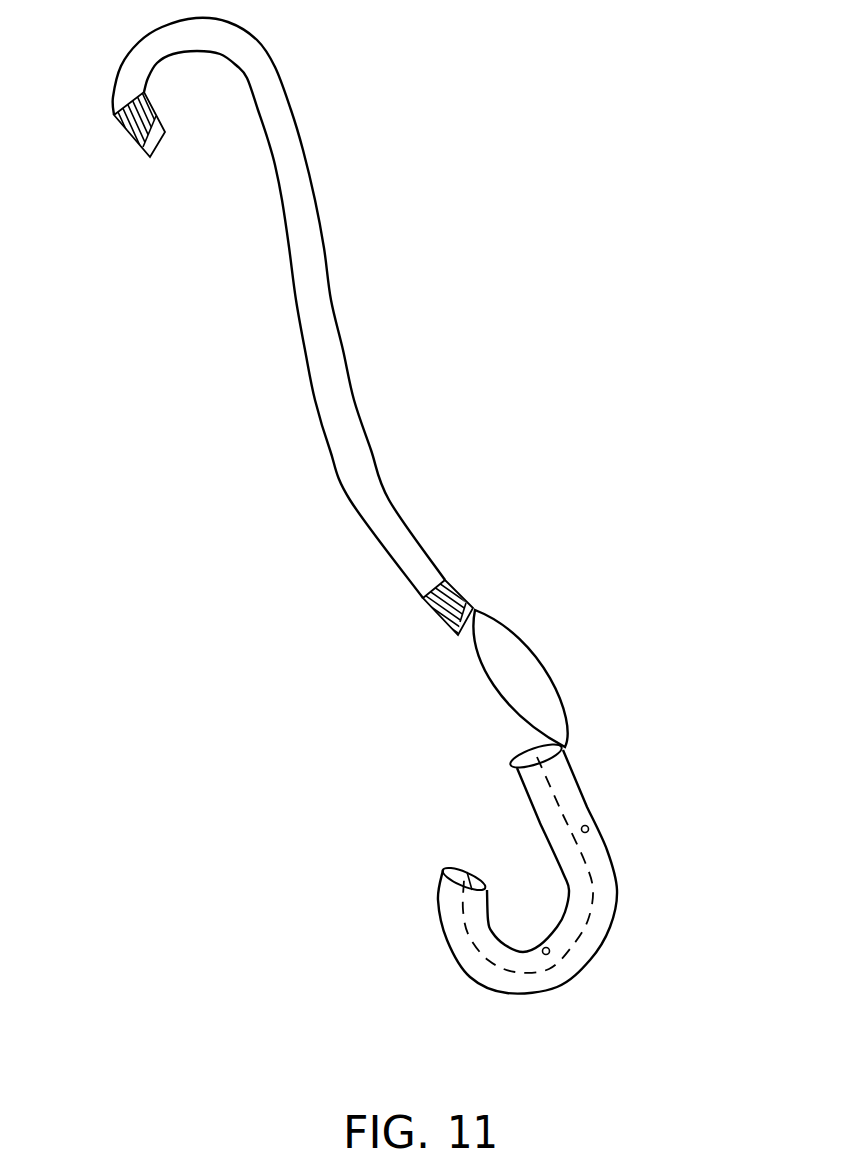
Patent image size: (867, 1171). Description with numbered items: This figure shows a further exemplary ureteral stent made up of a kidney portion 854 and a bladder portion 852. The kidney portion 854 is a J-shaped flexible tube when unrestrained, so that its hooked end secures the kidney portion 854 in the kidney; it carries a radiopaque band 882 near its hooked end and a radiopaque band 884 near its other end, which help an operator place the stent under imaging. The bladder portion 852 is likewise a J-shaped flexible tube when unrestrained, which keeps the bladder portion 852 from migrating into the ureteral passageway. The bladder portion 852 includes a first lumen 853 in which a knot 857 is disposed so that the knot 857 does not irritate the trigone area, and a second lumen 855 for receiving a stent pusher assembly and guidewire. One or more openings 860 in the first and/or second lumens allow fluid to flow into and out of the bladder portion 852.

The bladder portion 852 is at (636, 838).
The first lumen 853 is at (450, 868).
The kidney portion 854 is at (392, 303).
The second lumen 855 is at (478, 877).
The knot 857 is at (552, 750).
The openings 860 is at (592, 830).
The radiopaque band 882 is at (122, 135).
The radiopaque band 884 is at (457, 598).